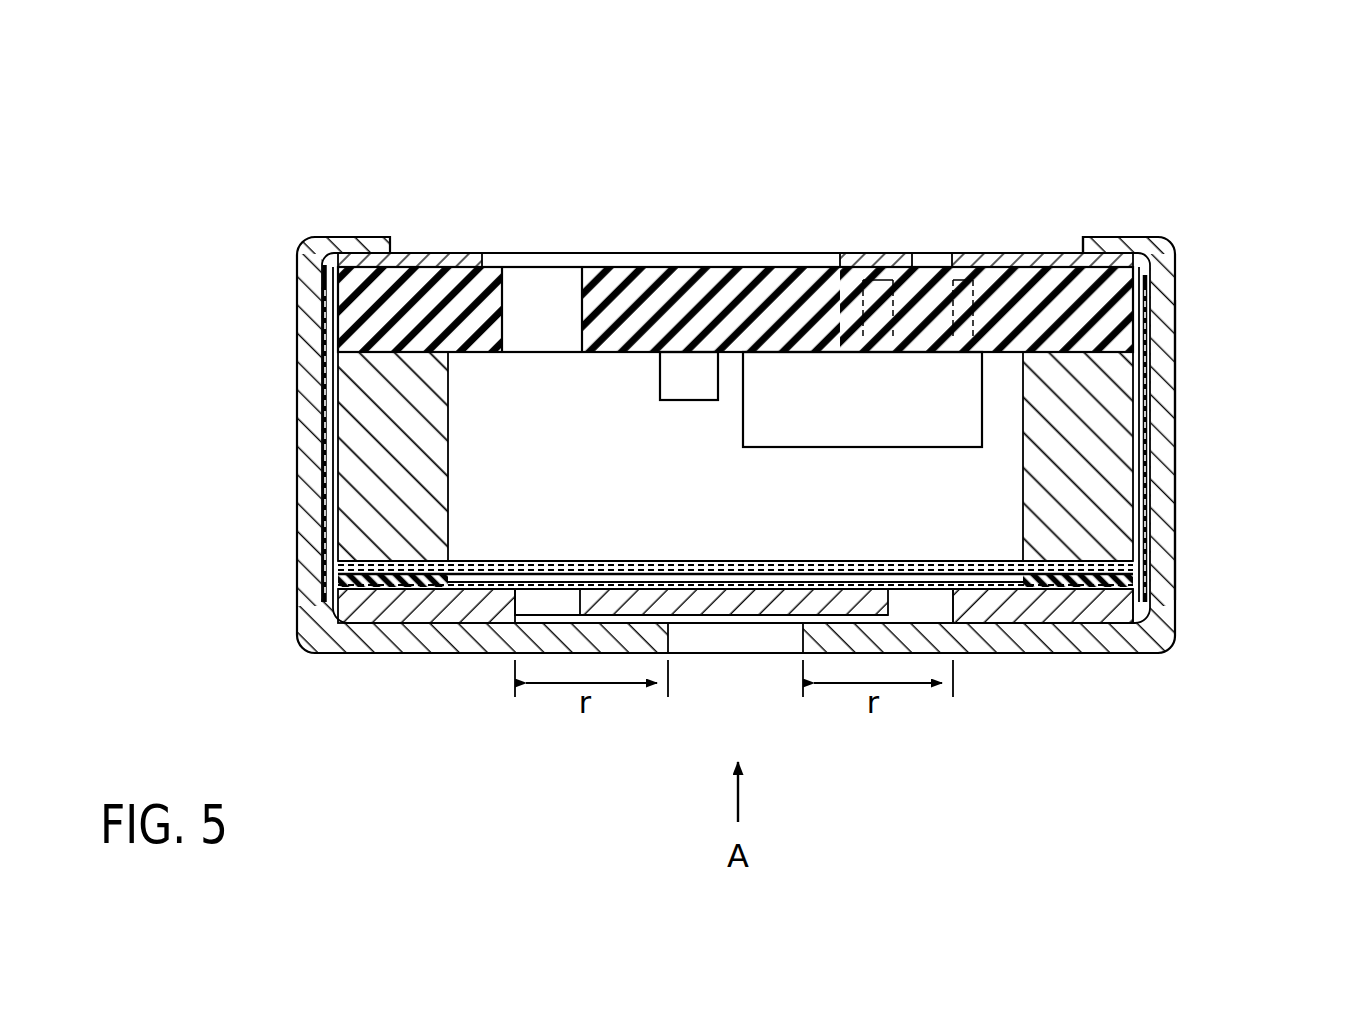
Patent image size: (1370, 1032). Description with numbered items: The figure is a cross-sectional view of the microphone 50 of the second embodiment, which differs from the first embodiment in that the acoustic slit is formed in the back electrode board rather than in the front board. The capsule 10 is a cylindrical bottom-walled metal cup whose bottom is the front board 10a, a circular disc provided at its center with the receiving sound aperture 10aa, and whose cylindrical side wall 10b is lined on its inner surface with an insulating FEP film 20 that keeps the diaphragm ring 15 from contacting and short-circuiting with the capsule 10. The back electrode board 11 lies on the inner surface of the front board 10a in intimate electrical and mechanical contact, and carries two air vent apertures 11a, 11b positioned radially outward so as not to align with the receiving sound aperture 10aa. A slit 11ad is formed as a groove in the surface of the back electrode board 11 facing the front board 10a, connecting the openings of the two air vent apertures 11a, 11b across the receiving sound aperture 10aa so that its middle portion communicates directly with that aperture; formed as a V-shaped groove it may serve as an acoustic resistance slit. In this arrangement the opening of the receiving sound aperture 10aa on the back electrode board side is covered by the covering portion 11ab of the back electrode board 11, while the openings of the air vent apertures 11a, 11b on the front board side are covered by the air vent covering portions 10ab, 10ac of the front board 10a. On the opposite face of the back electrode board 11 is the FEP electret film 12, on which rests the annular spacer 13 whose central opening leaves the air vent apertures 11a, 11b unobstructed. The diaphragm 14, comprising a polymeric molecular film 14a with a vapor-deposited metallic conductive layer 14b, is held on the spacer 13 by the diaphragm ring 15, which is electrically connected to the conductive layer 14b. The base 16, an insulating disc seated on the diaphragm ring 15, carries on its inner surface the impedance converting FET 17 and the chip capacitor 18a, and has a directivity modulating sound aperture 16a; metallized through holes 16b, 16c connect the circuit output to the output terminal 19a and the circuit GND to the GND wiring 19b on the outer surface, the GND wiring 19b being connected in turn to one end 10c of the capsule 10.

The microphone 50 is at (1222, 158).
The capsule 10 is at (1175, 367).
The front board 10a is at (388, 640).
The receiving sound aperture 10aa is at (738, 640).
The air vent covering portion 10ab is at (542, 647).
The air vent covering portion 10ac is at (904, 645).
The cylindrical side wall 10b is at (1163, 541).
The one end of the capsule 10c is at (1108, 238).
The back electrode board 11 is at (1048, 612).
The air vent aperture 11a is at (543, 607).
The receiving sound aperture covering portion 11ab is at (712, 598).
The slit 11ad is at (860, 622).
The air vent aperture 11b is at (927, 607).
The FEP film 12 is at (455, 595).
The spacer 13 is at (338, 578).
The diaphragm 14 is at (190, 440).
The polymeric molecular film 14a is at (473, 575).
The conductive layer 14b is at (490, 563).
The diaphragm ring 15 is at (1110, 436).
The base 16 is at (1105, 288).
The directivity modulating sound aperture 16a is at (540, 288).
The through hole 16b is at (843, 282).
The through hole 16c is at (973, 290).
The FET 17 is at (798, 380).
The chip capacitor 18a is at (683, 372).
The output terminal 19a is at (888, 252).
The GND wiring 19b is at (450, 252).
The FEP film 20 is at (322, 316).